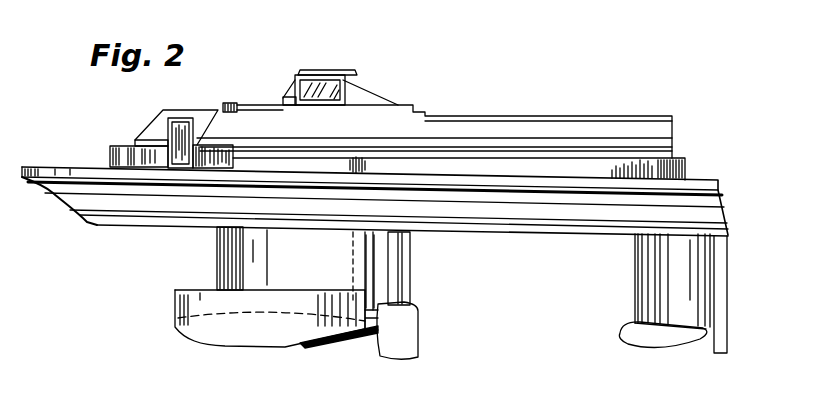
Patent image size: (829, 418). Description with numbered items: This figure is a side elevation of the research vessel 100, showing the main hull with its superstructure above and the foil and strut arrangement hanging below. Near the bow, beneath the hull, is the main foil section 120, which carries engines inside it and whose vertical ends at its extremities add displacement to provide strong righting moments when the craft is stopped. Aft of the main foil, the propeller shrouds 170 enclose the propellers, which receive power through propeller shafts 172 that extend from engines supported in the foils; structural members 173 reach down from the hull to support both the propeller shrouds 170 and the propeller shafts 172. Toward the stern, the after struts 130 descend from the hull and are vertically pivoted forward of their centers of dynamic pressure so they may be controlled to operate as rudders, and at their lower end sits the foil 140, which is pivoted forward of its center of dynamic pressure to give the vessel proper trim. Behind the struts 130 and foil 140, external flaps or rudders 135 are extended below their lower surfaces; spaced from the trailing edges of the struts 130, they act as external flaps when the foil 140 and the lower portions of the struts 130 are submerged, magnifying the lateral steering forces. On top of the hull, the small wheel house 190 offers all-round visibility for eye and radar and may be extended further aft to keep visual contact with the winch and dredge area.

The research vessel 100 is at (436, 96).
The main foil section 120 is at (233, 310).
The after struts 130 is at (703, 280).
The external flaps or rudders 135 is at (718, 328).
The foil 140 is at (632, 330).
The propeller shrouds 170 is at (405, 352).
The propeller shafts 172 is at (373, 330).
The structural members 173 is at (370, 298).
The wheel house 190 is at (303, 90).